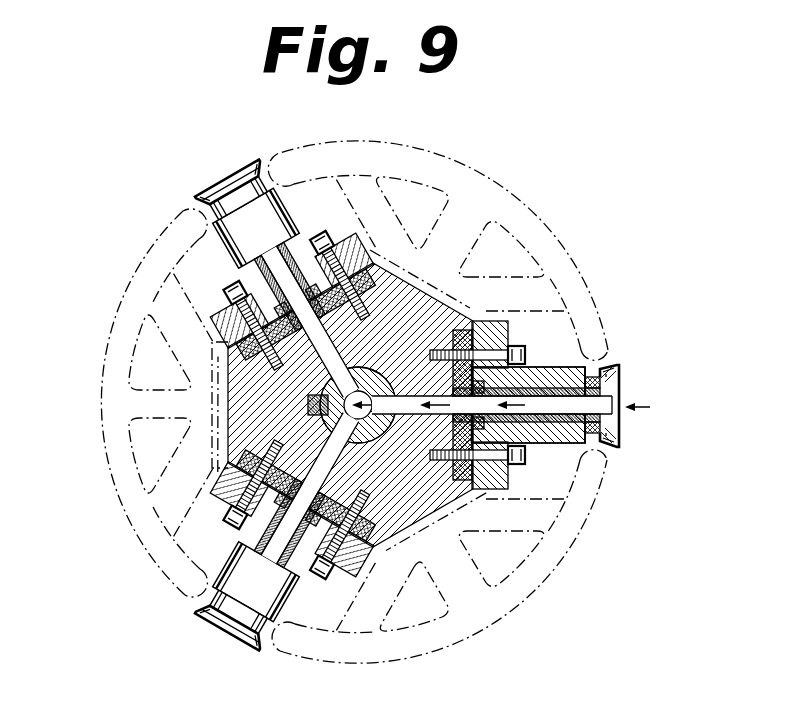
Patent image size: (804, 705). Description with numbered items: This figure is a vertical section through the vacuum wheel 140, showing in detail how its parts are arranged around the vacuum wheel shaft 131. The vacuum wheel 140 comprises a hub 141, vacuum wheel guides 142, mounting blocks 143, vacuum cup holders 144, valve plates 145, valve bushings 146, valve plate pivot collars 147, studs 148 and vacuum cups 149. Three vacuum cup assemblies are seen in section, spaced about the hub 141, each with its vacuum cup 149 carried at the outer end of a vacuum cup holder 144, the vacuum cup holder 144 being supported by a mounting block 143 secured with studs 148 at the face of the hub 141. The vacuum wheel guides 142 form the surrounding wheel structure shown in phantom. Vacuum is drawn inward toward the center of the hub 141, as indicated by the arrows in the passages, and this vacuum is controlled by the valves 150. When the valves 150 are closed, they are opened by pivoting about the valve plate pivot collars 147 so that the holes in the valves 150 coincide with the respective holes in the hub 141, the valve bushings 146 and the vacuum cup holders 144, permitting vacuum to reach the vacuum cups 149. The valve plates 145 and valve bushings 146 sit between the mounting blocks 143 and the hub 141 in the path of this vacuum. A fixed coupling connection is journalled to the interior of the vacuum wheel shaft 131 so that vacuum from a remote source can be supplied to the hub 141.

The vacuum wheel shaft 131 is at (345, 410).
The vacuum wheel 140 is at (116, 304).
The hub 141 is at (225, 427).
The vacuum wheel guides 142 is at (588, 280).
The mounting blocks 143 is at (252, 263).
The vacuum cup holders 144 is at (298, 245).
The valve plates 145 is at (226, 366).
The valve bushings 146 is at (300, 322).
The valve plate pivot collars 147 is at (250, 352).
The studs 148 is at (330, 242).
The vacuum cups 149 is at (247, 185).
The valves 150 is at (240, 362).